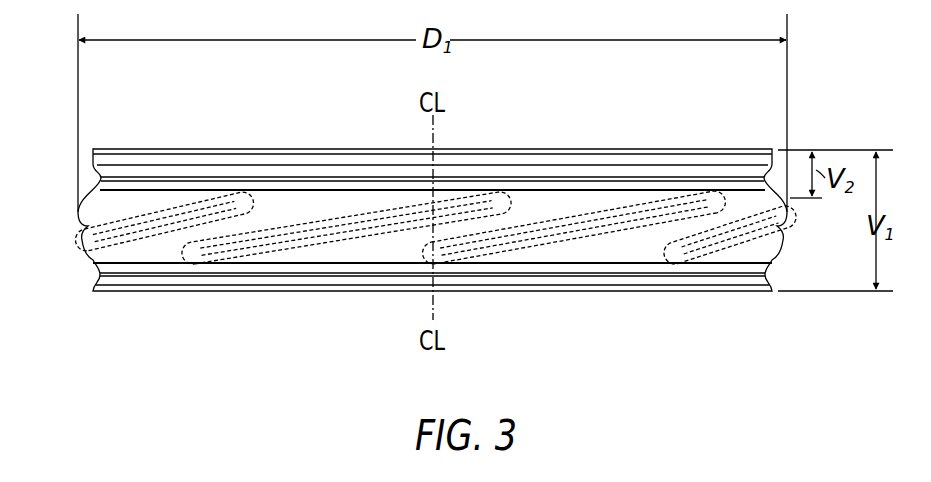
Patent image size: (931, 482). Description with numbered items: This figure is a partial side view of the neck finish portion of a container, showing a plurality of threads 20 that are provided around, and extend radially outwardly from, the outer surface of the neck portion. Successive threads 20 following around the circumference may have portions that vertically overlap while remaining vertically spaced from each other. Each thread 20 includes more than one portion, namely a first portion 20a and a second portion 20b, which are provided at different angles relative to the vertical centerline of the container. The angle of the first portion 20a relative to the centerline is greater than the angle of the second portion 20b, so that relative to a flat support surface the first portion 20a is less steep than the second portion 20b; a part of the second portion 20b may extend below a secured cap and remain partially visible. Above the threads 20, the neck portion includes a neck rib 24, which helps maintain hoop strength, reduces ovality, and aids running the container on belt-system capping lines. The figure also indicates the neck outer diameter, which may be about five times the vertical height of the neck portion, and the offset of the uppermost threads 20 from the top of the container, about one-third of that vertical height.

The thread 20 is at (435, 223).
The first portion 20a is at (603, 218).
The second portion 20b is at (493, 237).
The neck rib 24 is at (87, 163).